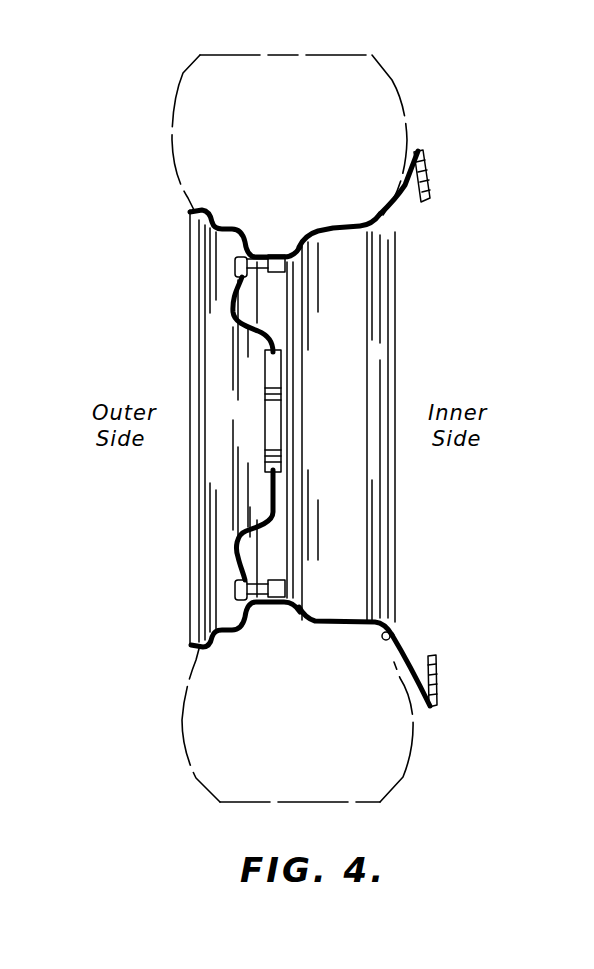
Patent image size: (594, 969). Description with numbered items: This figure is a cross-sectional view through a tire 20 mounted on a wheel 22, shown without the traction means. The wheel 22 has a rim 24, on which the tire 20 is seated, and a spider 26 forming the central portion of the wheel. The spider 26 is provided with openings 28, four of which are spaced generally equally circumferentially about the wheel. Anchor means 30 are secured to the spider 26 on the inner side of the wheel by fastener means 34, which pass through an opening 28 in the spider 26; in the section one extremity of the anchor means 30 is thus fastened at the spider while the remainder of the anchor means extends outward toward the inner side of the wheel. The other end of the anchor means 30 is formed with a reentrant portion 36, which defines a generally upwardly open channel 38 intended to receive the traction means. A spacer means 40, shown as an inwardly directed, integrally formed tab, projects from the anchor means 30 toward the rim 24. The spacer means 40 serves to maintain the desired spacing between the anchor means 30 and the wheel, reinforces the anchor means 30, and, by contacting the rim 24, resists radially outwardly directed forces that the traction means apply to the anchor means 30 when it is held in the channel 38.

The tire 20 is at (407, 122).
The wheel 22 is at (190, 262).
The rim 24 is at (222, 229).
The spider 26 is at (283, 343).
The openings 28 is at (277, 602).
The anchor means 30 is at (397, 212).
The fastener means 34 is at (243, 590).
The reentrant portion 36 is at (438, 675).
The channel 38 is at (423, 653).
The spacer means 40 is at (390, 632).